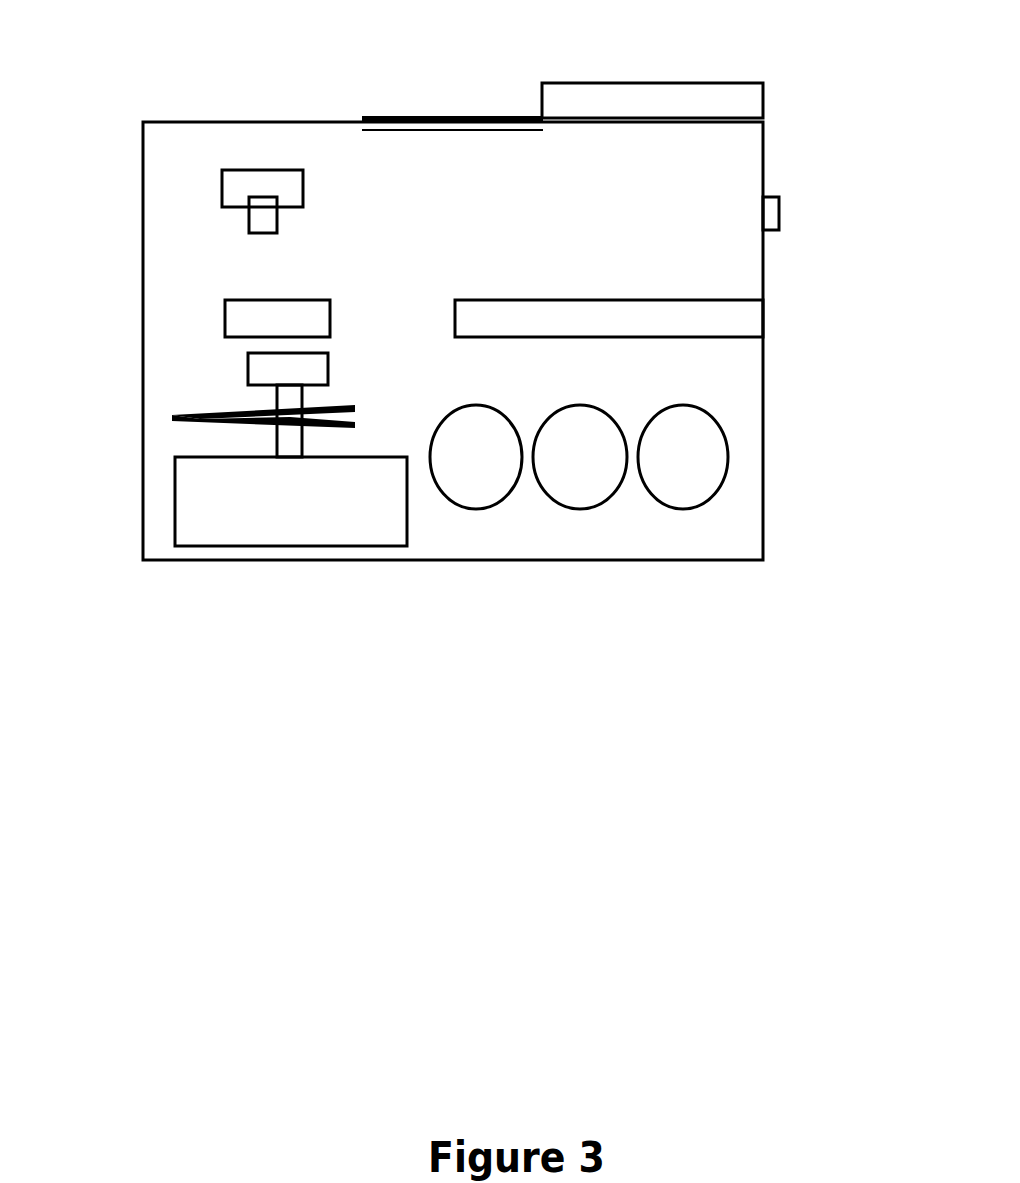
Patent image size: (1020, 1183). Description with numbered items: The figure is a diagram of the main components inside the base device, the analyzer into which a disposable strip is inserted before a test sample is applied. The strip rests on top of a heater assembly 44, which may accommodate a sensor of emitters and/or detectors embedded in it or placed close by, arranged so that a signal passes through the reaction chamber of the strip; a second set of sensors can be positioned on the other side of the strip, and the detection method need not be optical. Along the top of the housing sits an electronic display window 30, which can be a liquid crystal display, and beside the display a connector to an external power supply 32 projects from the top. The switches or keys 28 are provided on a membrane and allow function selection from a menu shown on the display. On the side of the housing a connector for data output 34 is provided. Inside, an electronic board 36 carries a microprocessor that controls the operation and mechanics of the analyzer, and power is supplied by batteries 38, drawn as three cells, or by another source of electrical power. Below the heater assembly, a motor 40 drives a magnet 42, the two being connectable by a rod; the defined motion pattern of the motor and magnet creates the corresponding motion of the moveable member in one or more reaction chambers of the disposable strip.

The switches or keys 28 is at (250, 167).
The electronic display window 30 is at (407, 115).
The connector to an external power supply 32 is at (610, 82).
The connector for data output 34 is at (767, 222).
The electronic board 36 is at (722, 324).
The batteries 38 is at (707, 453).
The motor 40 is at (305, 482).
The magnet 42 is at (248, 382).
The heater assembly 44 is at (225, 317).